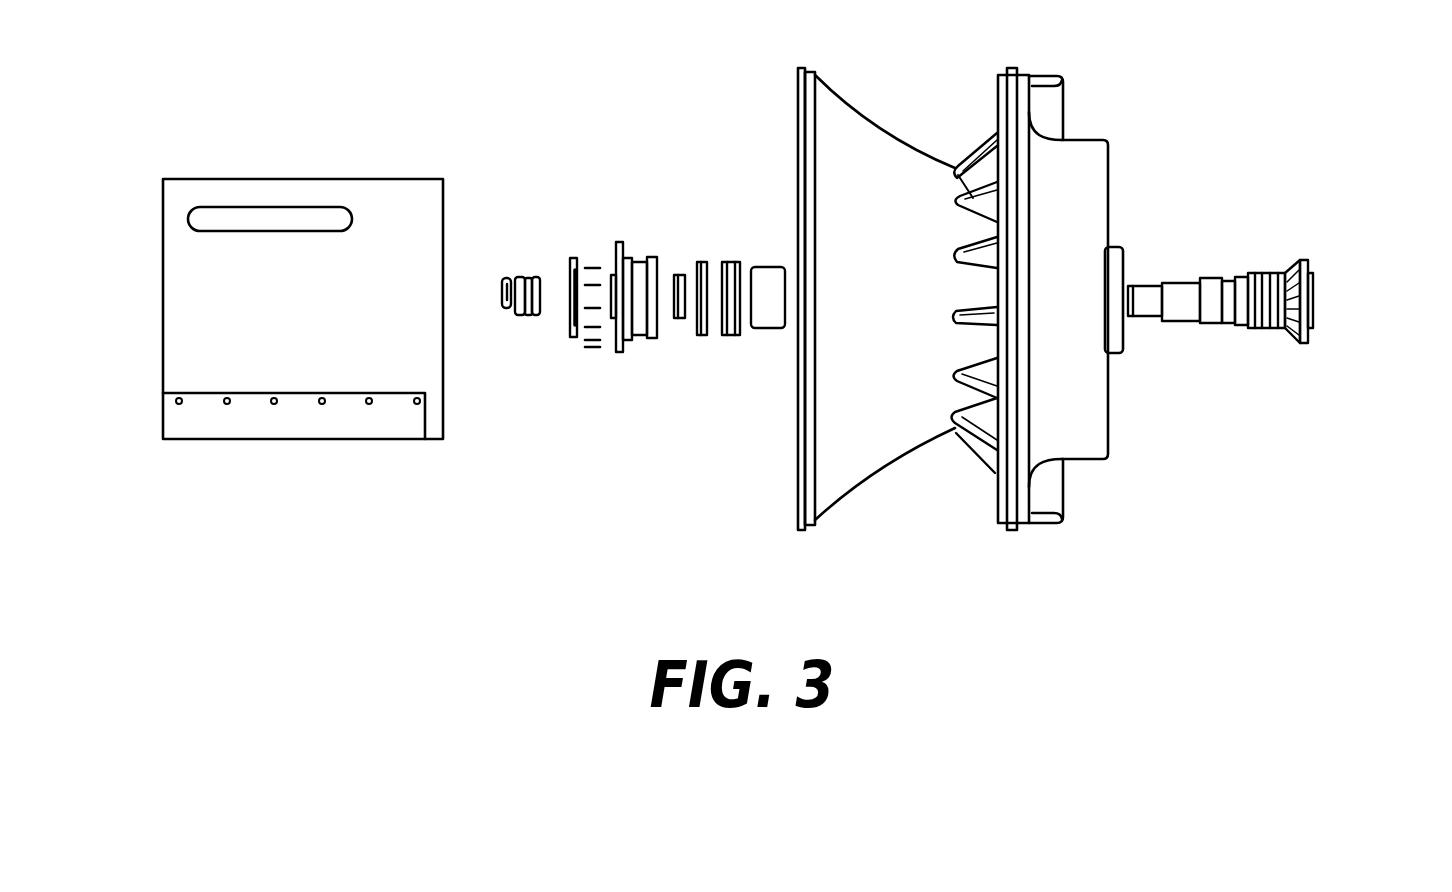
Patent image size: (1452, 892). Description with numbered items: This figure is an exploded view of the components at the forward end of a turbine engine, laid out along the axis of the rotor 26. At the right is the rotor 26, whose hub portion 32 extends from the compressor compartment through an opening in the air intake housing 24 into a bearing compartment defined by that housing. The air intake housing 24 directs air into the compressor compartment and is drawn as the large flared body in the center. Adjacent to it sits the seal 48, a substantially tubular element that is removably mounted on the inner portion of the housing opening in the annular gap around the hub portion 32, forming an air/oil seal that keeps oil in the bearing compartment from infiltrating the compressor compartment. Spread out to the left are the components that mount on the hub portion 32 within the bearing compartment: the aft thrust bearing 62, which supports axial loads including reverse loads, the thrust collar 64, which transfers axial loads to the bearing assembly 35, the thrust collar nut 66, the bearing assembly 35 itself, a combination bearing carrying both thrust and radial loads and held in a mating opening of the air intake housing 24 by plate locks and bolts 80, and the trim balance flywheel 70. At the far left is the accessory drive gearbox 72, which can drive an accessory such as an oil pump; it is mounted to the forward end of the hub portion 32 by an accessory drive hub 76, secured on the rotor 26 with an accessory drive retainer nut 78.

The air intake housing 24 is at (890, 150).
The rotor 26 is at (1346, 288).
The hub portion 32 is at (1130, 250).
The bearing assembly 35 is at (634, 275).
The seal 48 is at (770, 268).
The aft thrust bearing 62 is at (732, 325).
The thrust collar 64 is at (703, 262).
The thrust collar nut 66 is at (680, 318).
The trim balance flywheel 70 is at (578, 258).
The accessory drive gearbox 72 is at (313, 428).
The accessory drive hub 76 is at (533, 315).
The accessory drive retainer nut 78 is at (505, 310).
The plate locks and bolts 80 is at (592, 364).